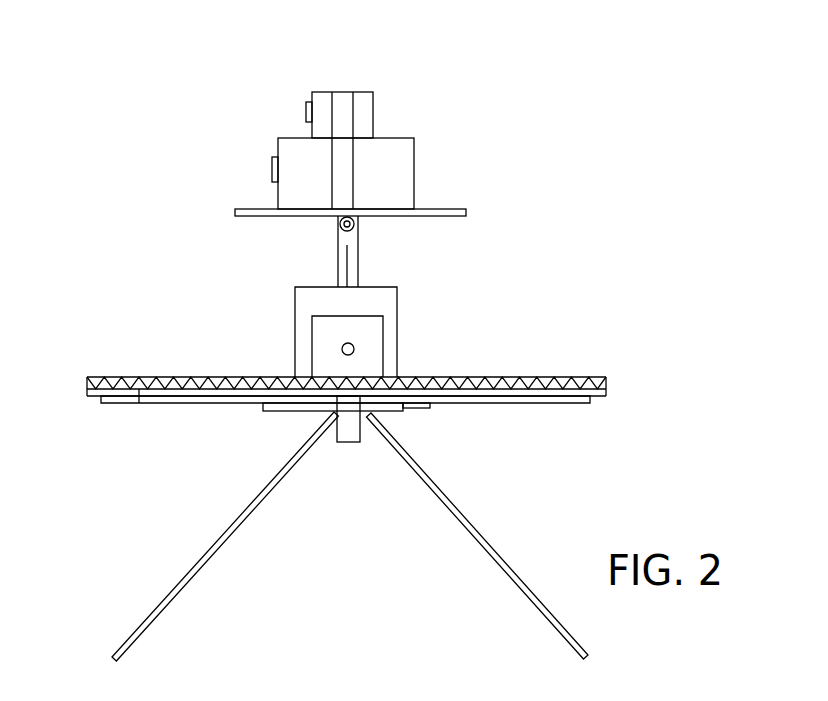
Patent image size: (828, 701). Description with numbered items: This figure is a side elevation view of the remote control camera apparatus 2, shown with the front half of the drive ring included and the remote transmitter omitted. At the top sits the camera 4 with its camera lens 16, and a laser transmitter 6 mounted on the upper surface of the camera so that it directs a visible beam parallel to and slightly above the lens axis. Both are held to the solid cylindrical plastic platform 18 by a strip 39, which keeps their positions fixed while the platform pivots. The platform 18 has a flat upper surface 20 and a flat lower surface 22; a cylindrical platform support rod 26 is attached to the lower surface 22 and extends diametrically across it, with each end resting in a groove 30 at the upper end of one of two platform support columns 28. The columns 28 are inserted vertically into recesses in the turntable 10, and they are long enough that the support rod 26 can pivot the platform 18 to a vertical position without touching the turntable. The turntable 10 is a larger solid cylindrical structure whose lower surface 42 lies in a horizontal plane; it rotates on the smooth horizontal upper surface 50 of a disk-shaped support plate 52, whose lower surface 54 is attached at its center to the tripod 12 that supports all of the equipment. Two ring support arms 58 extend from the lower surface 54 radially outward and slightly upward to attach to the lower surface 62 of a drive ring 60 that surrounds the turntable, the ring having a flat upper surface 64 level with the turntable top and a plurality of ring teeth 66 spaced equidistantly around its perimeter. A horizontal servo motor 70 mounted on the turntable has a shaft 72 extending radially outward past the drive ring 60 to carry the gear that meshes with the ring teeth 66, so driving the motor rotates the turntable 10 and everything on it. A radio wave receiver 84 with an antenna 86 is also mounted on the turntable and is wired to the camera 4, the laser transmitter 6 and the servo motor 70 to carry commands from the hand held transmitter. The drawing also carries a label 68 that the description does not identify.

The remote control camera apparatus 2 is at (364, 60).
The strip 39 is at (334, 100).
The laser transmitter 6 is at (366, 112).
The camera 4 is at (403, 160).
The camera lens 16 is at (272, 165).
The flat upper surface 20 is at (450, 207).
The platform 18 is at (478, 215).
The flat lower surface 22 is at (452, 217).
The groove 30 is at (339, 224).
The platform support rod 26 is at (356, 226).
The platform support columns 28 is at (337, 268).
The antenna 86 is at (357, 262).
The radio wave receiver 84 is at (398, 297).
The horizontal servo motor 70 is at (384, 350).
The shaft 72 is at (342, 349).
The toothed strip 68 is at (593, 380).
The ring teeth 66 is at (606, 382).
The drive ring 60 is at (608, 394).
The flat upper surface 64 is at (138, 393).
The lower surface 42 is at (551, 404).
The lower surface 62 is at (604, 403).
The support plate 52 is at (262, 406).
The horizontal upper surface 50 is at (402, 412).
The lower surface 54 is at (285, 460).
The ring support arms 58 is at (345, 443).
The turntable 10 is at (100, 400).
The tripod 12 is at (505, 557).